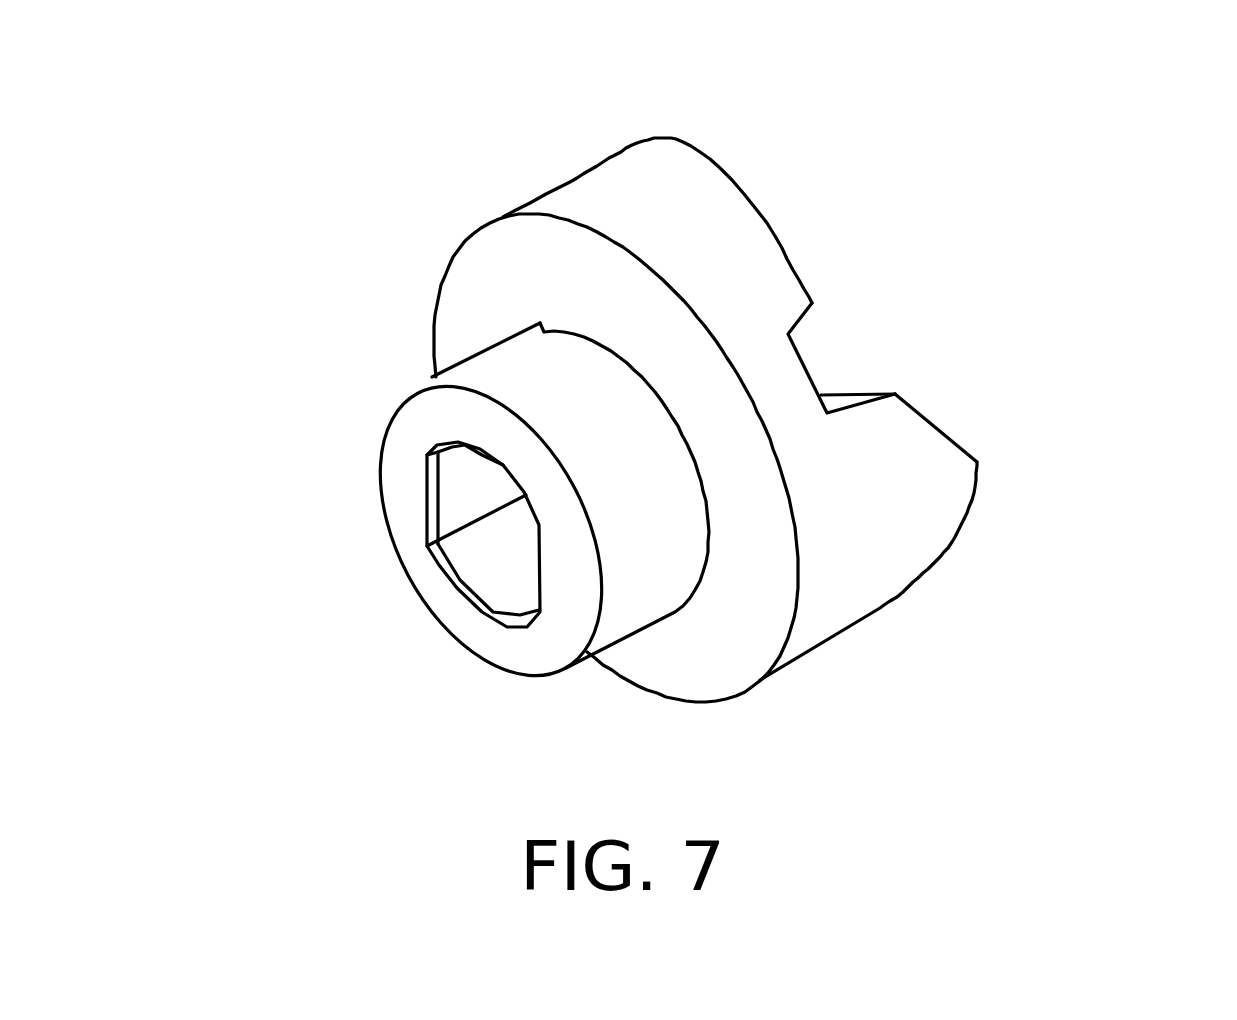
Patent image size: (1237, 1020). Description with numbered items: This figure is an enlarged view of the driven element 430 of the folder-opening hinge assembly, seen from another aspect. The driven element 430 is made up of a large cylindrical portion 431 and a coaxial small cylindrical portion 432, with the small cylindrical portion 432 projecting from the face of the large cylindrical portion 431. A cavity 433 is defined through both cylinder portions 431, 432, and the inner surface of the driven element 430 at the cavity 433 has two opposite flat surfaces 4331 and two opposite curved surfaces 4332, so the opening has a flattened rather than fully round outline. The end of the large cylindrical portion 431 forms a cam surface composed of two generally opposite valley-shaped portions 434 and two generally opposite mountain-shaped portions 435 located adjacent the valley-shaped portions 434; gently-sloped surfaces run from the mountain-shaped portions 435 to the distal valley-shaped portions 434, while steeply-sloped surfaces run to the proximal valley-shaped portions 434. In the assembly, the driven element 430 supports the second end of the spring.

The driven element 430 is at (760, 128).
The large cylindrical portion 431 is at (633, 210).
The small cylindrical portion 432 is at (537, 393).
The cavity 433 is at (350, 501).
The flat surfaces 4331 is at (462, 477).
The curved surfaces 4332 is at (498, 572).
The valley-shaped portions 434 is at (837, 400).
The mountain-shaped portions 435 is at (977, 460).